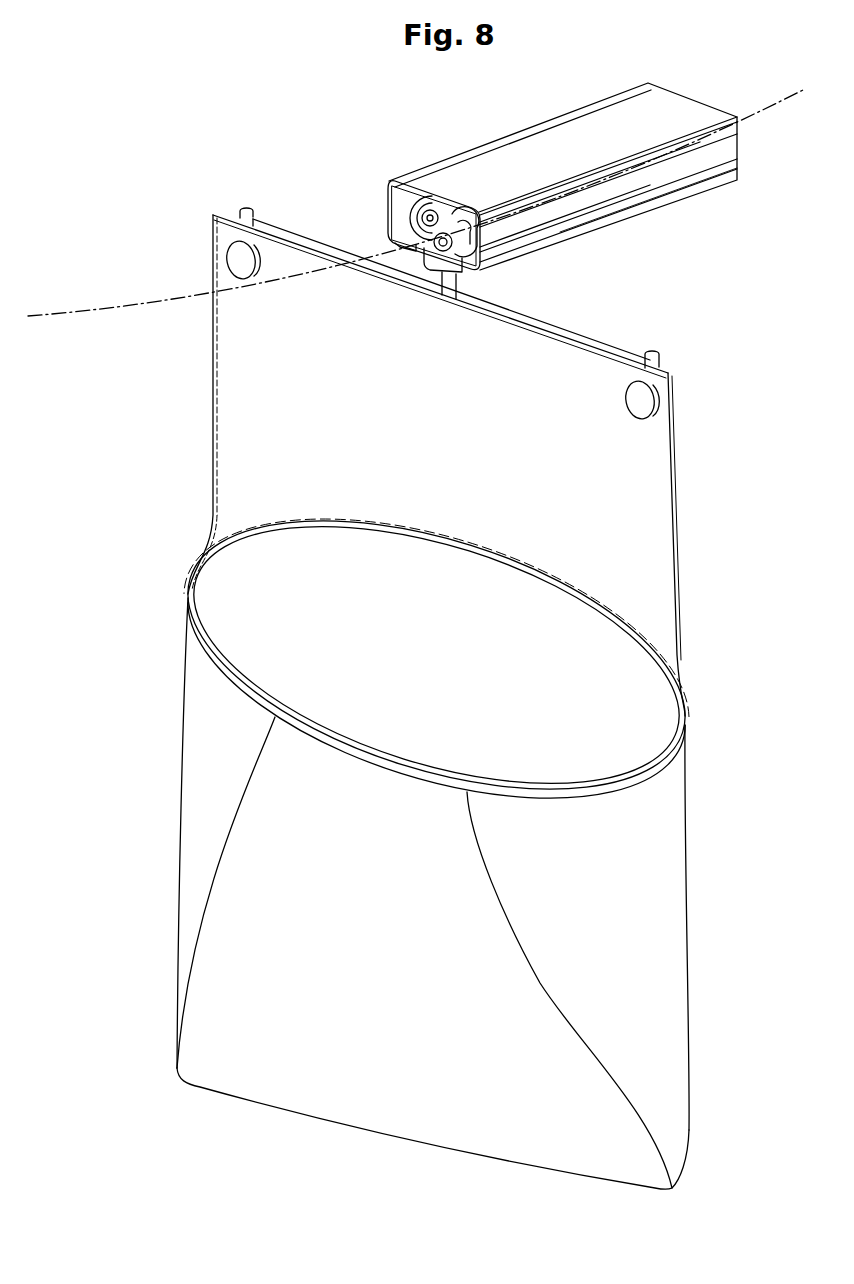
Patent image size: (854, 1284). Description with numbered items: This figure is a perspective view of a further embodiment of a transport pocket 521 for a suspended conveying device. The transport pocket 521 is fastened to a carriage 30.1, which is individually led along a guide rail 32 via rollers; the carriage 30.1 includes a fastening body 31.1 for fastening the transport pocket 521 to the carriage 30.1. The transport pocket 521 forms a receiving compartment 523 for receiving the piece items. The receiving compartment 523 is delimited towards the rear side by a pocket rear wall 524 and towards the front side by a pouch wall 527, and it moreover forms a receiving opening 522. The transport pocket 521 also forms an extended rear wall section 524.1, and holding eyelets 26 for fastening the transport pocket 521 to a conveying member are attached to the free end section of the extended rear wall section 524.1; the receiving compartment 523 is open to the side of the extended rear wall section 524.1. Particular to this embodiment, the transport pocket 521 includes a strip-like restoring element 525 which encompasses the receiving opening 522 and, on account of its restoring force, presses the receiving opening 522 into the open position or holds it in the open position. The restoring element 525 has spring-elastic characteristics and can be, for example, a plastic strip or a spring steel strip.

The carriage 30.1 is at (426, 218).
The guide rail 32 is at (660, 185).
The holding eyelets 26 is at (235, 253).
The fastening body 31.1 is at (523, 315).
The extended rear wall section 524.1 is at (308, 397).
The pocket rear wall 524 is at (218, 488).
The transport pocket 521 is at (673, 520).
The receiving opening 522 is at (520, 615).
The restoring element 525 is at (228, 677).
The receiving compartment 523 is at (582, 888).
The pouch wall 527 is at (647, 992).